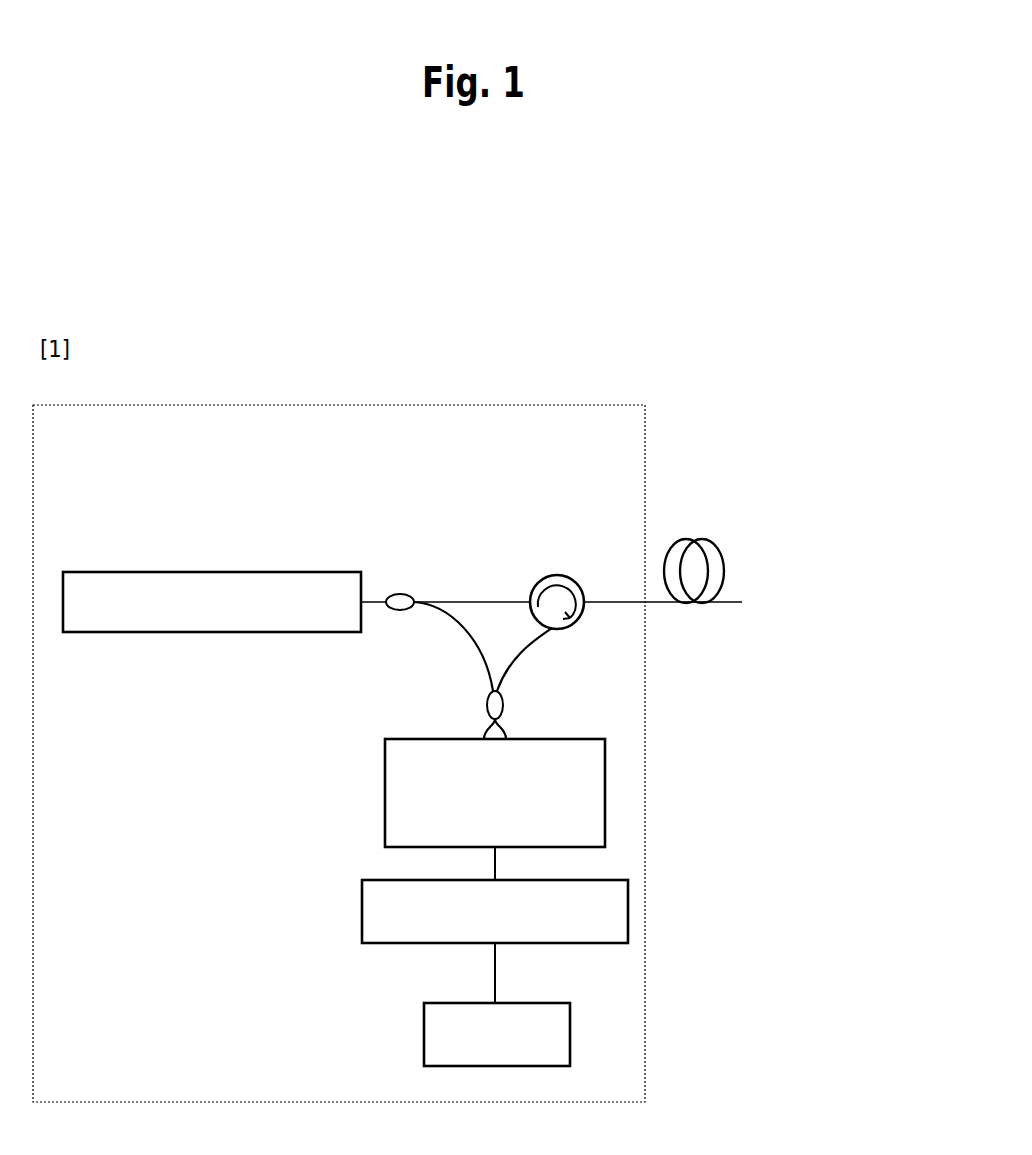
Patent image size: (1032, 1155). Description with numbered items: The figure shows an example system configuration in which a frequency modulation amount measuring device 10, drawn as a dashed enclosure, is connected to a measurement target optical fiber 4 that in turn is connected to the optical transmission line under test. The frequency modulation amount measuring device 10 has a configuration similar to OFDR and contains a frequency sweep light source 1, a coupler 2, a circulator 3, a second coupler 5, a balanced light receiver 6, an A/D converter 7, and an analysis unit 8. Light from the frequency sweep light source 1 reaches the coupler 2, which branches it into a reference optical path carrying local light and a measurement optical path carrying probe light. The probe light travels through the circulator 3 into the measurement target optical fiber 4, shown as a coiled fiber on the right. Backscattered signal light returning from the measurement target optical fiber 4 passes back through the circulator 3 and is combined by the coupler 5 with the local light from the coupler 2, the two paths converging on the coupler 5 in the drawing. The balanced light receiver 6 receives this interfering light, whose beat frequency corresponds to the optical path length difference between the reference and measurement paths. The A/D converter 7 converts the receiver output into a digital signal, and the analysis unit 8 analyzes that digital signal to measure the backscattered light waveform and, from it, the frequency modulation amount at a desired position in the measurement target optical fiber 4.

The frequency sweep light source 1 is at (110, 563).
The coupler 2 is at (400, 592).
The circulator 3 is at (537, 572).
The measurement target optical fiber 4 is at (688, 537).
The coupler 5 is at (487, 698).
The balanced light receiver 6 is at (395, 783).
The A/D converter 7 is at (353, 905).
The analysis unit 8 is at (422, 1053).
The frequency modulation amount measuring device 10 is at (545, 405).